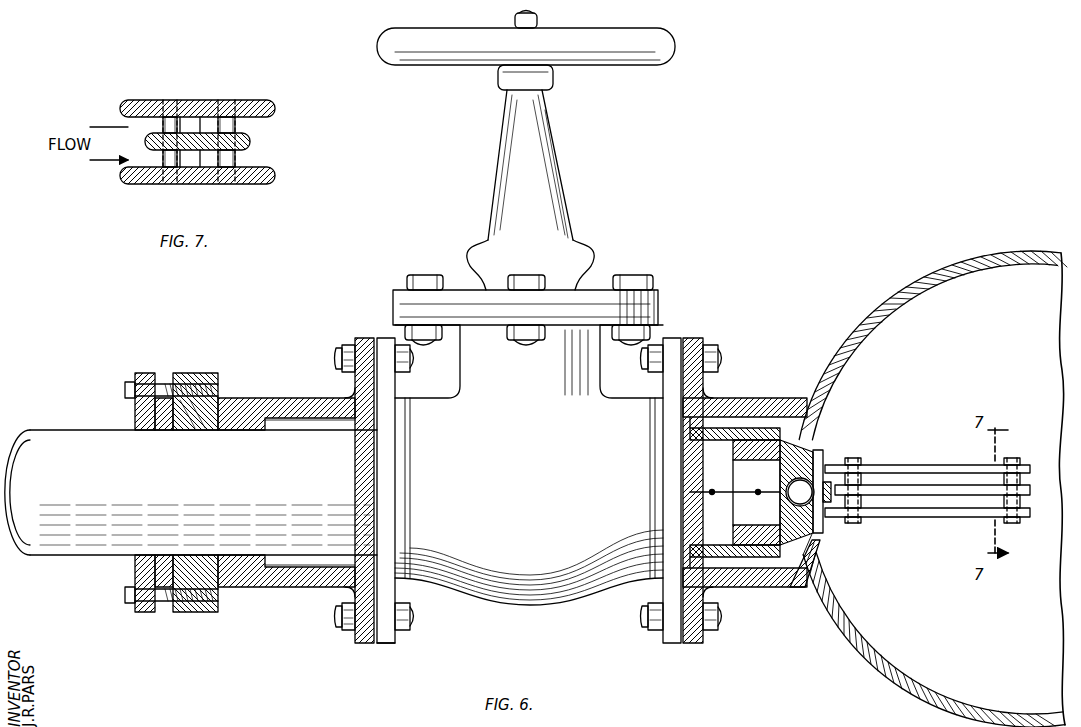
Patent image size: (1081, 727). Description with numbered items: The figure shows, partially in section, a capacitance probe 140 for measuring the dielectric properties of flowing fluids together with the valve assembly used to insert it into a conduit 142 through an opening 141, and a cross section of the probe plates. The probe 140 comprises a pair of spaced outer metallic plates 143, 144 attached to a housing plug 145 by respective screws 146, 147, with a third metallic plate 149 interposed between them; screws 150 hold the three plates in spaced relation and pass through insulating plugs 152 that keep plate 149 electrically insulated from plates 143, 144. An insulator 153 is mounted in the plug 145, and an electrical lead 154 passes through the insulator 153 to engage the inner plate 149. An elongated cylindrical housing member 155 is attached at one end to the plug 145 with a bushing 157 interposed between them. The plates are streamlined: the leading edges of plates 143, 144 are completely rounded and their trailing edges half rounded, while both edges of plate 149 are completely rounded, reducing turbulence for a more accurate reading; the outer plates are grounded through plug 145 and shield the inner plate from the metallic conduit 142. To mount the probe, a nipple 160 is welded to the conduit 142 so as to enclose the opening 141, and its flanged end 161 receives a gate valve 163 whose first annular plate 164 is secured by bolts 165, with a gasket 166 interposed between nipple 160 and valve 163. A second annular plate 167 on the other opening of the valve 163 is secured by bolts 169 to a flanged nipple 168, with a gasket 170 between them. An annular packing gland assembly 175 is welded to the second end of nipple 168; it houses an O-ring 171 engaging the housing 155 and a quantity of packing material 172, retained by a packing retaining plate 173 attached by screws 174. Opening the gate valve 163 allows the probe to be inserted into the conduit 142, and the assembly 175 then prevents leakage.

In FIG. 6, the probe 140 is at (838, 445).
In FIG. 6, the opening 141 is at (825, 535).
In FIG. 6, the conduit 142 is at (905, 305).
In FIG. 7, the metallic plate 143 is at (252, 100).
In FIG. 6, the metallic plate 143 is at (944, 465).
In FIG. 7, the metallic plate 144 is at (138, 184).
In FIG. 6, the metallic plate 144 is at (930, 517).
In FIG. 6, the housing plug 145 is at (795, 587).
In FIG. 6, the screw 146 is at (782, 474).
In FIG. 6, the screw 147 is at (782, 508).
In FIG. 7, the third metallic plate 149 is at (200, 133).
In FIG. 6, the third metallic plate 149 is at (898, 485).
In FIG. 7, the screws 150 is at (168, 100).
In FIG. 6, the screws 150 is at (851, 458).
In FIG. 7, the insulating plugs 152 is at (160, 117).
In FIG. 6, the insulating plugs 152 is at (862, 473).
In FIG. 6, the insulator 153 is at (830, 502).
In FIG. 6, the electrical lead 154 is at (697, 490).
In FIG. 6, the elongated cylindrical housing member 155 is at (290, 445).
In FIG. 6, the bushing 157 is at (752, 432).
In FIG. 6, the nipple 160 is at (783, 398).
In FIG. 6, the flanged end 161 is at (696, 338).
In FIG. 6, the gate valve 163 is at (575, 210).
In FIG. 6, the first annular plate 164 is at (672, 643).
In FIG. 6, the bolts 165 is at (718, 358).
In FIG. 6, the gasket 166 is at (684, 338).
In FIG. 6, the second annular plate 167 is at (386, 338).
In FIG. 6, the flanged nipple 168 is at (362, 338).
In FIG. 6, the bolts 169 is at (345, 358).
In FIG. 6, the gasket 170 is at (377, 643).
In FIG. 6, the O-ring 171 is at (232, 580).
In FIG. 6, the packing material 172 is at (218, 385).
In FIG. 6, the packing retaining plate 173 is at (145, 382).
In FIG. 6, the screws 174 is at (136, 388).
In FIG. 6, the annular packing gland assembly 175 is at (195, 612).